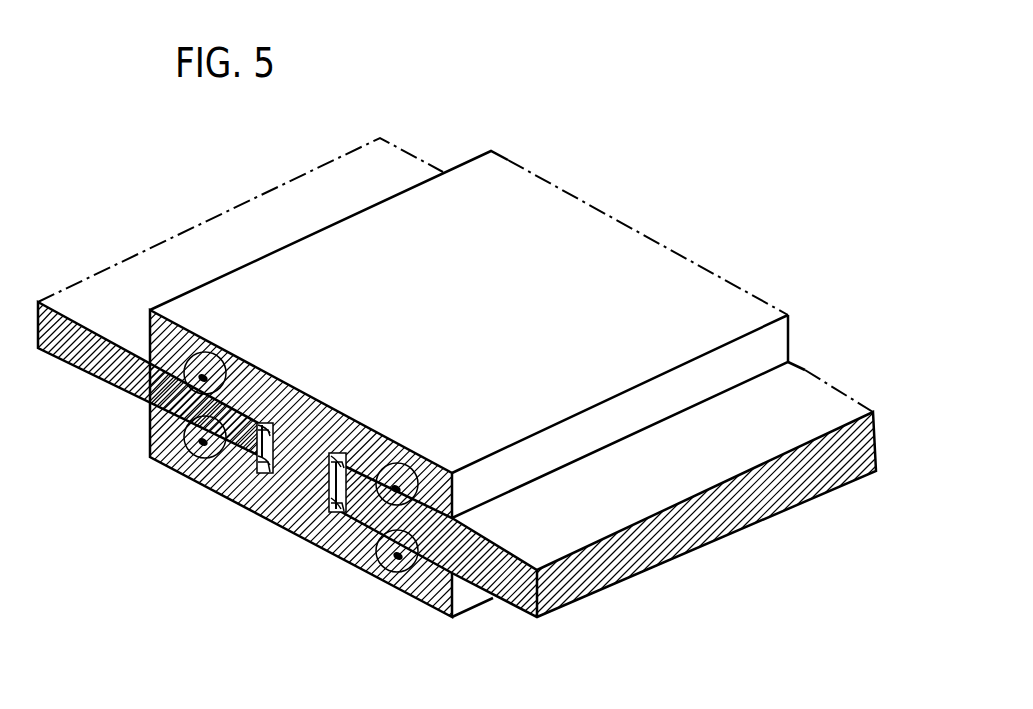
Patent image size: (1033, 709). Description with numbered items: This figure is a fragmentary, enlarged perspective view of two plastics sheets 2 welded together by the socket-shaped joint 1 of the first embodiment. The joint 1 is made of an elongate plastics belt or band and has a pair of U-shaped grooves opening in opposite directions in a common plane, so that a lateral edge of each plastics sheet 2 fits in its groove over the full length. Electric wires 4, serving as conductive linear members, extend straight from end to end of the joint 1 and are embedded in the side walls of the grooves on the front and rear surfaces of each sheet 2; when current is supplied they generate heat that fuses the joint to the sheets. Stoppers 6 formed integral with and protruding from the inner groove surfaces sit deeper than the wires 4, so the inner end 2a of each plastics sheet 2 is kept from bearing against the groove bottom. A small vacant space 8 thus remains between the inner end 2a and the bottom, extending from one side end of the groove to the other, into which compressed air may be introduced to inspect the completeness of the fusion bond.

The joint 1 is at (655, 224).
The plastics sheet 2 is at (412, 163).
The inner end of plastics sheet 2a is at (266, 422).
The electric wire 4 is at (203, 376).
The stopper 6 is at (262, 424).
The vacant space 8 is at (270, 468).